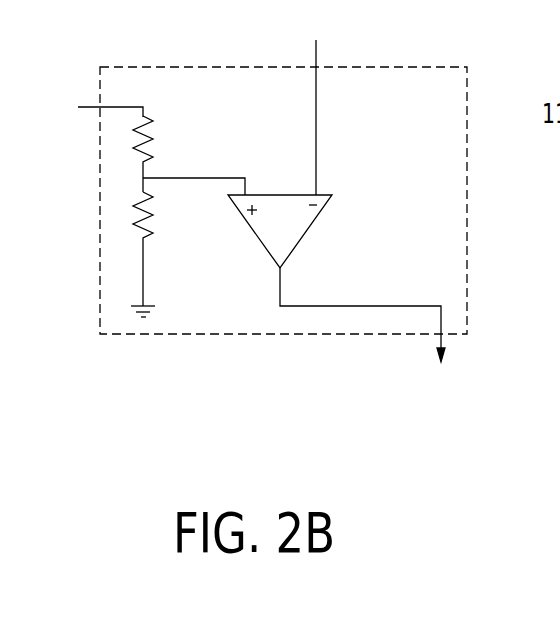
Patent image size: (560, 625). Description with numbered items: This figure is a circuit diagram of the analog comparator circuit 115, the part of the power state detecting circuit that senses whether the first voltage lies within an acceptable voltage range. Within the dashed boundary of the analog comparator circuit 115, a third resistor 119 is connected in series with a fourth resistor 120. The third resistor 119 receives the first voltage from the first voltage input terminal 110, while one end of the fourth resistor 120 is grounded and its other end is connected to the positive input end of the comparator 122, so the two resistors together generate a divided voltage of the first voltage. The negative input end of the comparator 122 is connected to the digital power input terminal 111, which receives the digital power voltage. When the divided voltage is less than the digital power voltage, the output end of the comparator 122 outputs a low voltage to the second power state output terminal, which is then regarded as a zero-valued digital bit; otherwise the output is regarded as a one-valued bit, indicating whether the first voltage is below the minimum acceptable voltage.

The first voltage input terminal 110 is at (90, 106).
The digital power input terminal 111 is at (317, 53).
The analog comparator circuit 115 is at (168, 67).
The third resistor 119 is at (148, 138).
The fourth resistor 120 is at (148, 225).
The comparator 122 is at (306, 232).